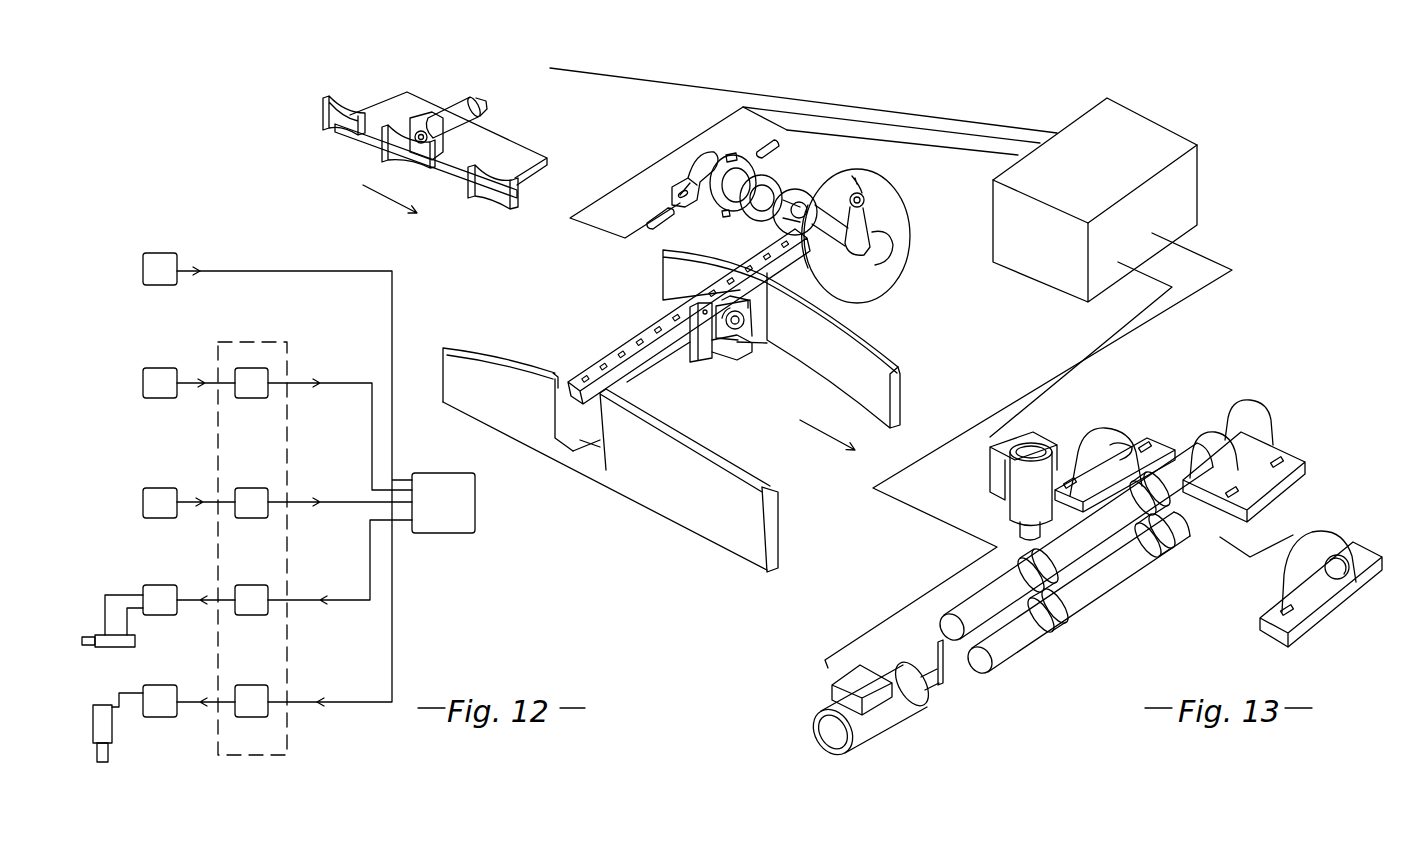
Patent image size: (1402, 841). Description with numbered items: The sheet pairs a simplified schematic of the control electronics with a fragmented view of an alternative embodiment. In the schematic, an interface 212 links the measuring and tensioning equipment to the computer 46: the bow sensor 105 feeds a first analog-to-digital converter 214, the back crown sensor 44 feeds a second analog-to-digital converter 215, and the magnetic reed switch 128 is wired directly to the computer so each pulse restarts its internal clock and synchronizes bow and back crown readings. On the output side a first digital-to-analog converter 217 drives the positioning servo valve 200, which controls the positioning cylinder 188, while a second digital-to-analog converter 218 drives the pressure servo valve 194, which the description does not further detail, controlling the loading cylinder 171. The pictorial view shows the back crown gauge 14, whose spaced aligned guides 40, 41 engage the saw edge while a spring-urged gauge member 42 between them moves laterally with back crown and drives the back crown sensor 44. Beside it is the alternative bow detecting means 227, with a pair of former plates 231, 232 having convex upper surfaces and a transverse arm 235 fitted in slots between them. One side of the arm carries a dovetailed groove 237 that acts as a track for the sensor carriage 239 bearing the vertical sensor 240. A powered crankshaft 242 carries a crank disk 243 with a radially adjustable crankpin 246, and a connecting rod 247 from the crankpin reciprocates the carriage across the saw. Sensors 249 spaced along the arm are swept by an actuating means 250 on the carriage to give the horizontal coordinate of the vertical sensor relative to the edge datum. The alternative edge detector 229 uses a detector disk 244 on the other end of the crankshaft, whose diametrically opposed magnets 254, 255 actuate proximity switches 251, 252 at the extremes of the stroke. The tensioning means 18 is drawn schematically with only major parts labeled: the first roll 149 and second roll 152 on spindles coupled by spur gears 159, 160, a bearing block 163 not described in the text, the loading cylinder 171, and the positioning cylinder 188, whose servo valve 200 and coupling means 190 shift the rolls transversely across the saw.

In FIG. 13, the back crown gauge 14 is at (536, 135).
In FIG. 13, the tensioning means 18 is at (1327, 390).
In FIG. 13, the guide 40 is at (340, 120).
In FIG. 13, the guide 41 is at (497, 193).
In FIG. 13, the gauge member 42 is at (407, 148).
In FIG. 12, the back crown sensor 44 is at (150, 518).
In FIG. 13, the back crown sensor 44 is at (450, 117).
In FIG. 12, the computer 46 is at (428, 533).
In FIG. 13, the computer 46 is at (1148, 134).
In FIG. 12, the sensor 105 is at (150, 398).
In FIG. 12, the magnetic reed switch 128 is at (160, 285).
In FIG. 13, the first roll 149 is at (1020, 537).
In FIG. 13, the second roll 152 is at (1063, 618).
In FIG. 13, the spur gear 159 is at (1172, 428).
In FIG. 13, the spur gear 160 is at (1168, 544).
In FIG. 13, the bearing block 163 is at (1296, 534).
In FIG. 12, the loading cylinder 171 is at (115, 691).
In FIG. 13, the loading cylinder 171 is at (1035, 470).
In FIG. 12, the positioning cylinder 188 is at (105, 647).
In FIG. 13, the positioning cylinder 188 is at (887, 718).
In FIG. 13, the coupling means 190 is at (927, 644).
In FIG. 12, the valve 194 is at (173, 729).
In FIG. 12, the positioning servo valve 200 is at (174, 575).
In FIG. 13, the positioning servo valve 200 is at (832, 690).
In FIG. 12, the interface 212 is at (288, 713).
In FIG. 12, the first analog-to-digital converter 214 is at (242, 398).
In FIG. 12, the second analog-to-digital converter 215 is at (242, 518).
In FIG. 12, the first digital-to-analog converter 217 is at (242, 615).
In FIG. 12, the second digital-to-analog converter 218 is at (242, 717).
In FIG. 13, the alternative bow detecting means 227 is at (600, 309).
In FIG. 13, the alternative edge detector 229 is at (774, 130).
In FIG. 13, the former plate 231 is at (657, 445).
In FIG. 13, the former plate 232 is at (850, 353).
In FIG. 13, the transverse arm 235 is at (656, 388).
In FIG. 13, the dovetailed-sectioned groove 237 is at (573, 417).
In FIG. 13, the sensor carriage 239 is at (688, 328).
In FIG. 13, the vertical sensor 240 is at (744, 312).
In FIG. 13, the crankshaft 242 is at (776, 199).
In FIG. 13, the crank disk 243 is at (893, 246).
In FIG. 13, the detector disk 244 is at (672, 196).
In FIG. 13, the crankpin 246 is at (867, 202).
In FIG. 13, the connecting rod 247 is at (803, 263).
In FIG. 13, the sensors 249 is at (617, 358).
In FIG. 13, the actuating means 250 is at (668, 291).
In FIG. 13, the proximity switch 251 is at (646, 220).
In FIG. 13, the proximity switch 252 is at (775, 148).
In FIG. 13, the magnet 254 is at (751, 156).
In FIG. 13, the magnet 255 is at (727, 218).